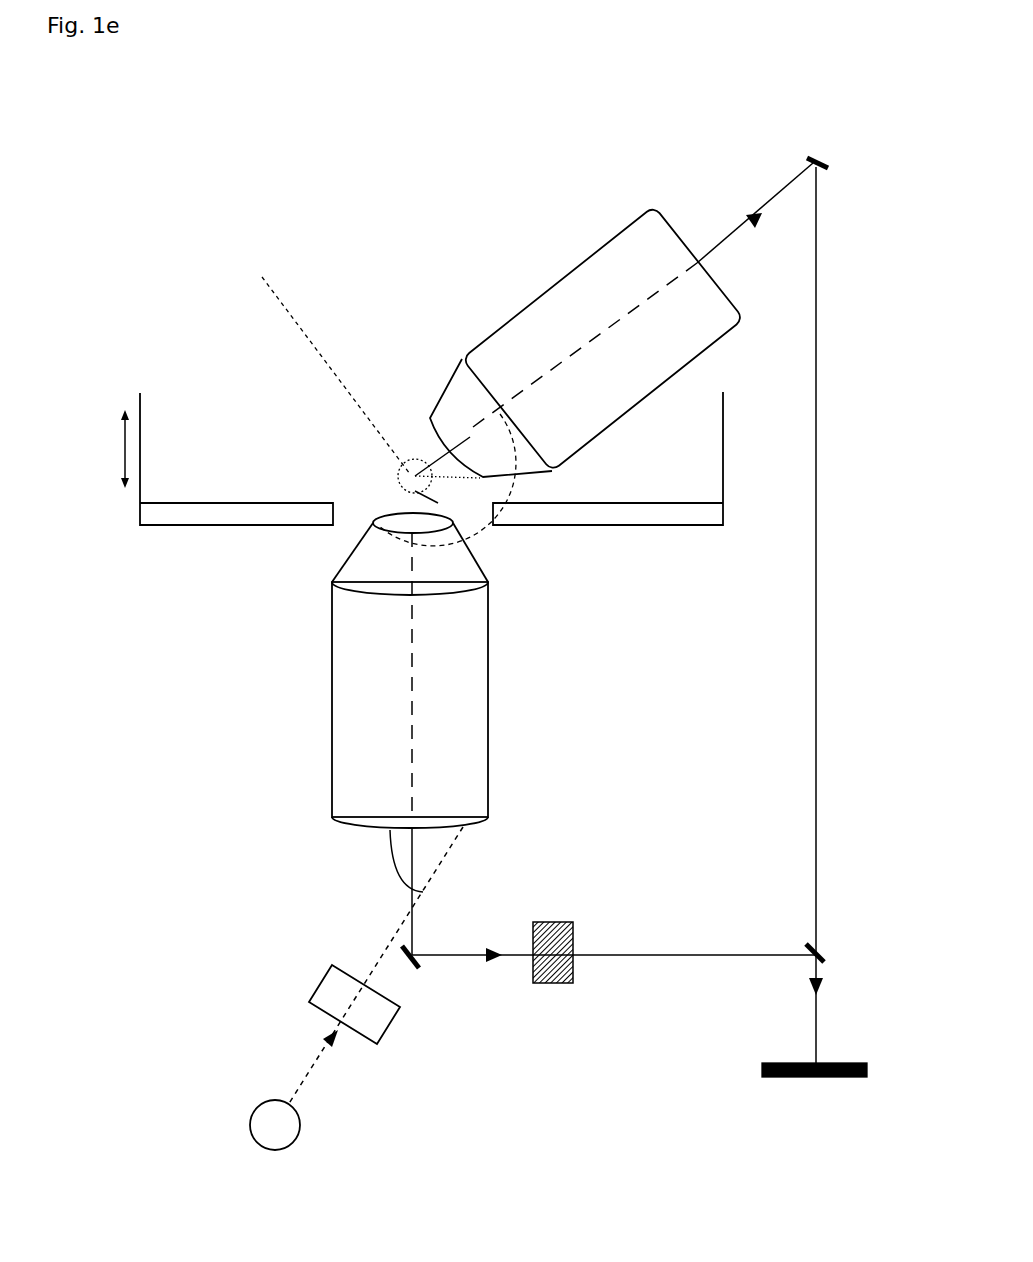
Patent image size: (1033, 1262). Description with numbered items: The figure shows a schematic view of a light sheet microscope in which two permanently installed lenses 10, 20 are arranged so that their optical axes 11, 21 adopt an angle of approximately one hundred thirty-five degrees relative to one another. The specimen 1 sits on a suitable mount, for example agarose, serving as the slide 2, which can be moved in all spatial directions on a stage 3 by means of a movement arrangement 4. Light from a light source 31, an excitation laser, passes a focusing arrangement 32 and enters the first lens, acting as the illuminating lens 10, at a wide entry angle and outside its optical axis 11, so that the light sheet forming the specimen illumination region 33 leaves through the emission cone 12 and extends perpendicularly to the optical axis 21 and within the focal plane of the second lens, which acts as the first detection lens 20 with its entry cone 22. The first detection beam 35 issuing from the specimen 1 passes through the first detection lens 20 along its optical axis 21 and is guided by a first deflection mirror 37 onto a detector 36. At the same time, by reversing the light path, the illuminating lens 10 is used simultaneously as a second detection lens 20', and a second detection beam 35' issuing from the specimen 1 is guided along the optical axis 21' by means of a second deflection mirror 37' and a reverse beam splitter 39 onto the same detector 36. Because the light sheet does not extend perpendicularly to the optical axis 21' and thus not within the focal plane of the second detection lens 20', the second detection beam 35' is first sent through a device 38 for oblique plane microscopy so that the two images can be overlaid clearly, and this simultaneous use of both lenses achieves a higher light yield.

The specimen 1 is at (407, 463).
The slide 2 is at (430, 437).
The stage 3 is at (730, 437).
The movement arrangement 4 is at (122, 452).
The illuminating lens 10 is at (404, 670).
The optical axis 11 is at (526, 675).
The emission cone 12 is at (438, 508).
The detection lens 20 is at (566, 283).
The second detection lens 20' is at (328, 670).
The optical axis 21 is at (566, 339).
The optical axis 21' is at (526, 675).
The entry cone 22 is at (426, 458).
The light source 31 is at (300, 1127).
The focusing arrangement 32 is at (393, 1030).
The specimen illumination region 33 is at (403, 927).
The first detection beam 35 is at (581, 283).
The second detection beam 35' is at (526, 762).
The detector 36 is at (785, 1082).
The first deflection mirror 37 is at (819, 571).
The second deflection mirror 37' is at (434, 1004).
The device for oblique plane microscopy 38 is at (553, 985).
The reverse beam splitter 39 is at (807, 943).